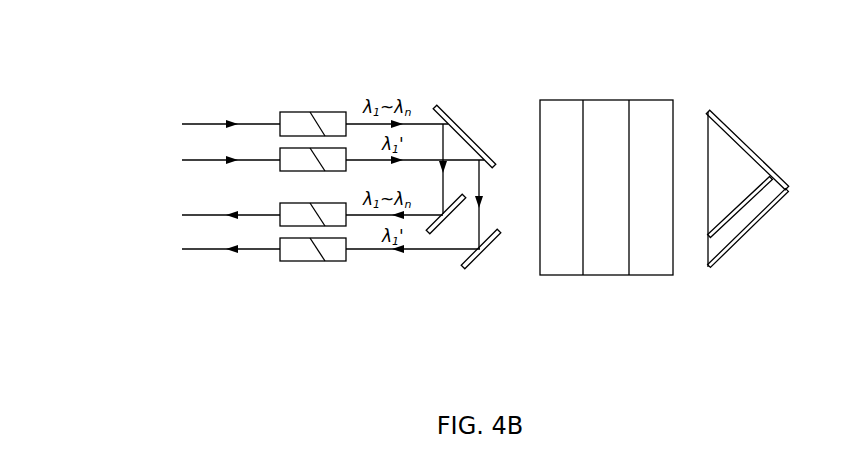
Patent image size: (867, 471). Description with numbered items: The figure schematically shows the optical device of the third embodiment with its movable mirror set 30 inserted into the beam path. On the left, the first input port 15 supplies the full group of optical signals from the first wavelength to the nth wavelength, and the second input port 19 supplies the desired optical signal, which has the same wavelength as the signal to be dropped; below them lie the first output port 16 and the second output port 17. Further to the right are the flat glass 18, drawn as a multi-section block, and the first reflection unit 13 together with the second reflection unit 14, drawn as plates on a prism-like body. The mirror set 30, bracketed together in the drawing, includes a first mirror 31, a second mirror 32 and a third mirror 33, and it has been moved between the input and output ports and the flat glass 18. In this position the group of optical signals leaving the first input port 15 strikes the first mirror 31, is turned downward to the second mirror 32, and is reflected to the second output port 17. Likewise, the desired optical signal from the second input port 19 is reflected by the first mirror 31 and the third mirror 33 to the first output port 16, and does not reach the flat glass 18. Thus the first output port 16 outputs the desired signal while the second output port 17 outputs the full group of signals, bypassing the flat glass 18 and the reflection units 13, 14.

The first reflection unit 13 is at (763, 198).
The second reflection unit 14 is at (735, 152).
The first input port 15 is at (330, 120).
The first output port 16 is at (333, 255).
The second output port 17 is at (300, 220).
The flat glass 18 is at (563, 107).
The second input port 19 is at (297, 153).
The mirror set 30 is at (480, 241).
The first mirror 31 is at (488, 165).
The second mirror 32 is at (438, 228).
The third mirror 33 is at (472, 265).